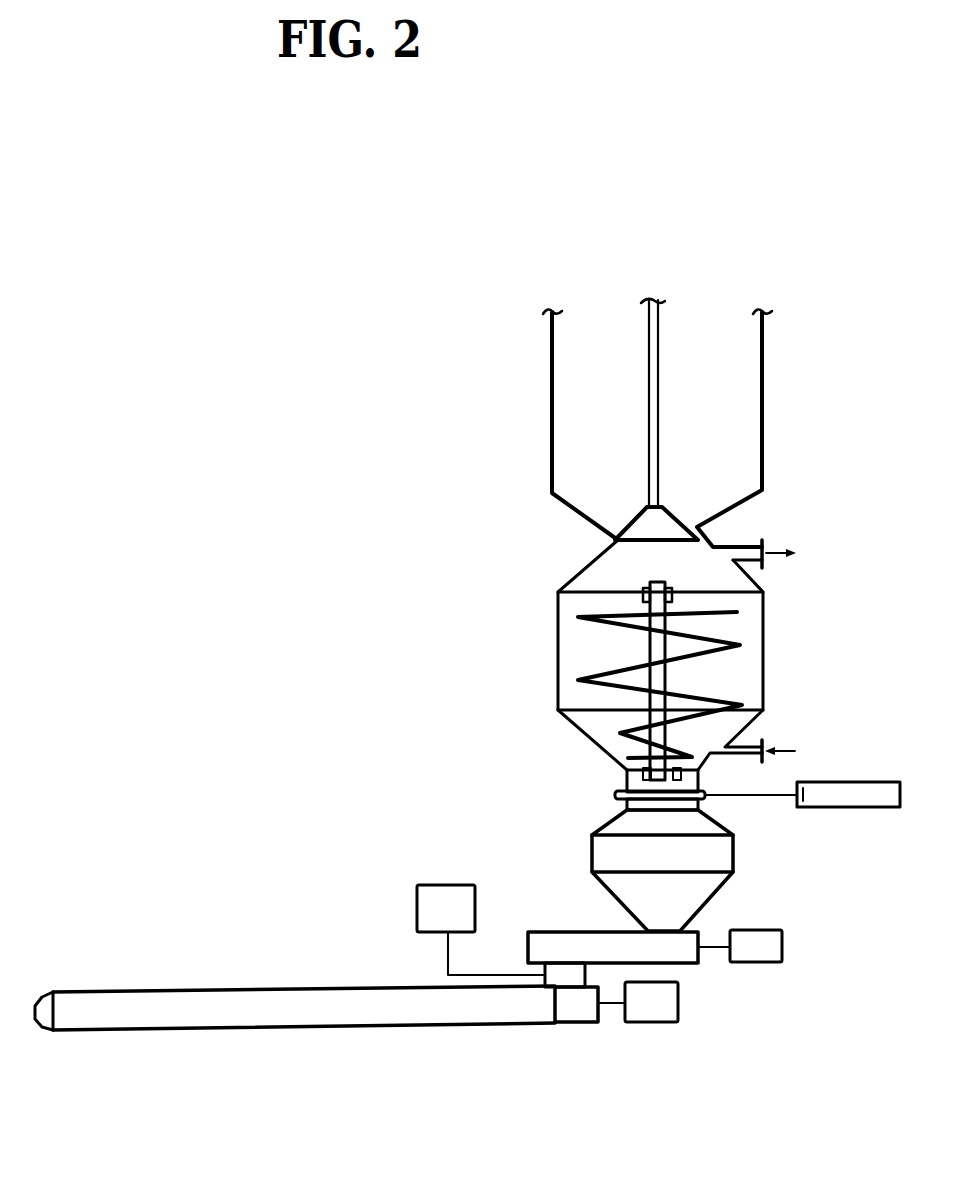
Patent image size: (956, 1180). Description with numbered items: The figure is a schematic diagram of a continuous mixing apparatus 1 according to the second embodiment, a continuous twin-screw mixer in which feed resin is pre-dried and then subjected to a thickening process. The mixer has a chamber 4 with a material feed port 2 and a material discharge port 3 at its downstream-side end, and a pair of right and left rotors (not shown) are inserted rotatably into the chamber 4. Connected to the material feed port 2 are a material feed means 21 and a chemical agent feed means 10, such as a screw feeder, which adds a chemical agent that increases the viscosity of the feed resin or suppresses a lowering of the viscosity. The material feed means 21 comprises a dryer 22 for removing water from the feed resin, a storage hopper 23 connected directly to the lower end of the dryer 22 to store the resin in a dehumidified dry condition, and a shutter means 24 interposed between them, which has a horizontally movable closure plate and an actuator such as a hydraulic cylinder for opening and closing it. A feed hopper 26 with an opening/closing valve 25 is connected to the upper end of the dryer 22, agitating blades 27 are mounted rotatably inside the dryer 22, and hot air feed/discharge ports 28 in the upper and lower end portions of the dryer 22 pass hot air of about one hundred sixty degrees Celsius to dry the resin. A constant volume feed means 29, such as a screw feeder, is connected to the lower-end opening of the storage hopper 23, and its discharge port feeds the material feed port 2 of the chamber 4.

The continuous mixing apparatus 1 is at (438, 852).
The material feed port 2 is at (555, 988).
The material discharge port 3 is at (55, 1010).
The chamber 4 is at (228, 1018).
The chemical agent feed means 10 is at (432, 924).
The material feed means 21 is at (514, 730).
The dryer 22 is at (558, 650).
The storage hopper 23 is at (733, 857).
The shutter means 24 is at (617, 797).
The opening/closing valve 25 is at (637, 533).
The feed hopper 26 is at (552, 402).
The agitating blades 27 is at (732, 645).
The hot air feed/discharge ports 28 is at (763, 540).
The constant volume feed means 29 is at (563, 932).